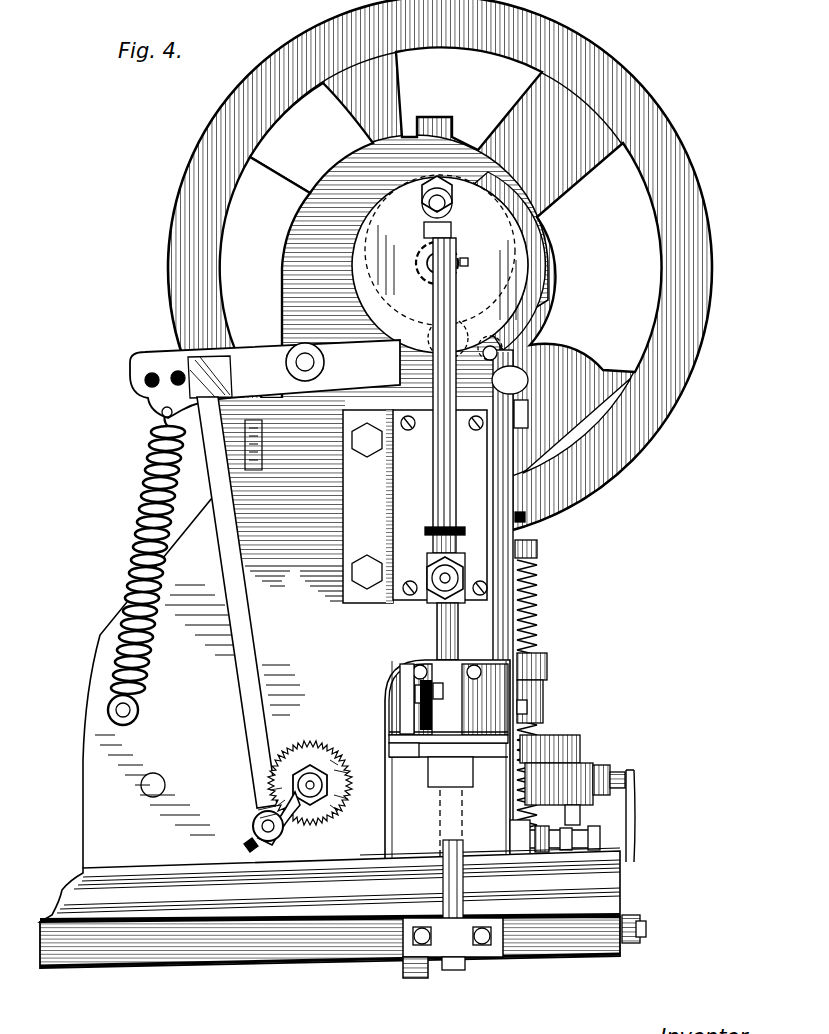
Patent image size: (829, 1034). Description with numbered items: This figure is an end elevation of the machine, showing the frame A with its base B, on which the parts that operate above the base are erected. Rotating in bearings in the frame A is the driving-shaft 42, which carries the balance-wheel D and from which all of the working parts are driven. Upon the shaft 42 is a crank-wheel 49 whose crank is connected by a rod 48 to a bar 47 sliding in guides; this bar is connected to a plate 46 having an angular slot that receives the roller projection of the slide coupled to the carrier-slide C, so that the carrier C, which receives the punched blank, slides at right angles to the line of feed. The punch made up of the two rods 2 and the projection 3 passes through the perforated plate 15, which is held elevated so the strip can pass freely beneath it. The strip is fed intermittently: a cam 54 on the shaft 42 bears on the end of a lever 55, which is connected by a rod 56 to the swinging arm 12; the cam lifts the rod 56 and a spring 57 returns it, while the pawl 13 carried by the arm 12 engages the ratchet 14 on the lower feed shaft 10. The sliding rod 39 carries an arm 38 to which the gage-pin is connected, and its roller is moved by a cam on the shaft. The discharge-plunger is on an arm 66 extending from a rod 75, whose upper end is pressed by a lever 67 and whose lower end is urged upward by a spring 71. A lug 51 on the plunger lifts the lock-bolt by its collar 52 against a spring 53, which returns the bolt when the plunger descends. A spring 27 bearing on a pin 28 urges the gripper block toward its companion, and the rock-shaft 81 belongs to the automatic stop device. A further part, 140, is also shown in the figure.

The balance-wheel D is at (712, 283).
The crank-wheel 49 is at (415, 267).
The cam 54 is at (540, 268).
The driving-shaft 42 is at (450, 275).
The frame A is at (95, 748).
The rock-shaft 81 is at (150, 797).
The sliding rod 39 is at (497, 356).
The lever 67 is at (514, 382).
The bar 47 is at (428, 393).
The rod 48 is at (466, 488).
The plate 46 is at (437, 641).
The lever 55 is at (265, 379).
The rod 56 is at (252, 630).
The spring 57 is at (128, 578).
The rods 2 is at (385, 697).
The projection 3 is at (432, 693).
The rod 75 is at (410, 714).
The arm 66 is at (413, 737).
The perforated plate 15 is at (424, 742).
The carrier-slide C is at (450, 772).
The ratchet 14 is at (327, 760).
The shaft 10 is at (322, 790).
The swinging arm 12 is at (292, 825).
The pawl 13 is at (255, 816).
The spring 53 is at (530, 580).
The collar 52 is at (538, 672).
The lug 51 is at (543, 705).
The gear casing 140 is at (555, 796).
The pin 28 is at (616, 774).
The spring 27 is at (637, 845).
The base B is at (330, 909).
The arm 38 is at (490, 872).
The spring 71 is at (417, 978).